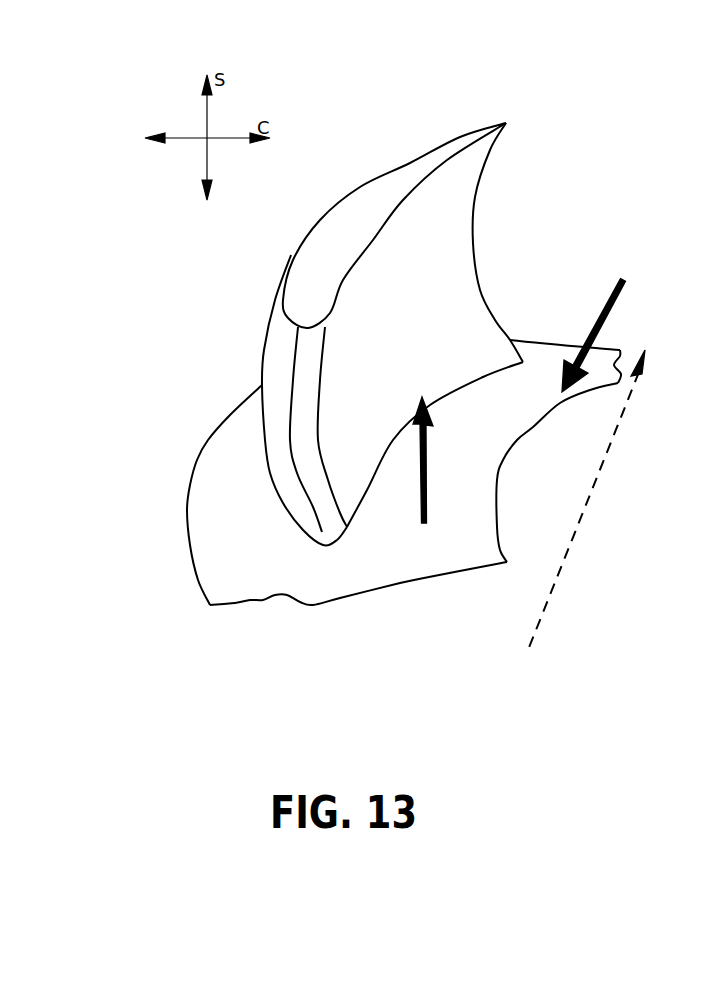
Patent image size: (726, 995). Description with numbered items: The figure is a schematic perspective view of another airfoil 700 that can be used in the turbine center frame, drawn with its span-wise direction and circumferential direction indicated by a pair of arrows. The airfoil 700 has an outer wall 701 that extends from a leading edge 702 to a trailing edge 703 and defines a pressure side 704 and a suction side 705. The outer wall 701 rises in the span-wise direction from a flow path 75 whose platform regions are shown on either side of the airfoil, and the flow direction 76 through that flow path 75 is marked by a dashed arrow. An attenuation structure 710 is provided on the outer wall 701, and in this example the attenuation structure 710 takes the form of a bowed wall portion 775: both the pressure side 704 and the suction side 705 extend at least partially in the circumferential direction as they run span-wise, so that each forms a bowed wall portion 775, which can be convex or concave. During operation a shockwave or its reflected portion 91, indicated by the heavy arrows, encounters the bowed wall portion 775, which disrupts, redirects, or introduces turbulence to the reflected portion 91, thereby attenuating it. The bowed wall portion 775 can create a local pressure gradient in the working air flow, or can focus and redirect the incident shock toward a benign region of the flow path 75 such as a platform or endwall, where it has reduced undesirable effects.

The airfoil 700 is at (450, 86).
The outer wall 701 is at (376, 185).
The leading edge 702 is at (320, 530).
The trailing edge 703 is at (488, 153).
The pressure side 704 is at (332, 518).
The suction side 705 is at (305, 518).
The attenuation structure 710 is at (472, 313).
The bowed wall portion 775 is at (415, 248).
The flow path 75 is at (244, 482).
The flow direction 76 is at (568, 548).
The reflected portion 91 is at (600, 327).